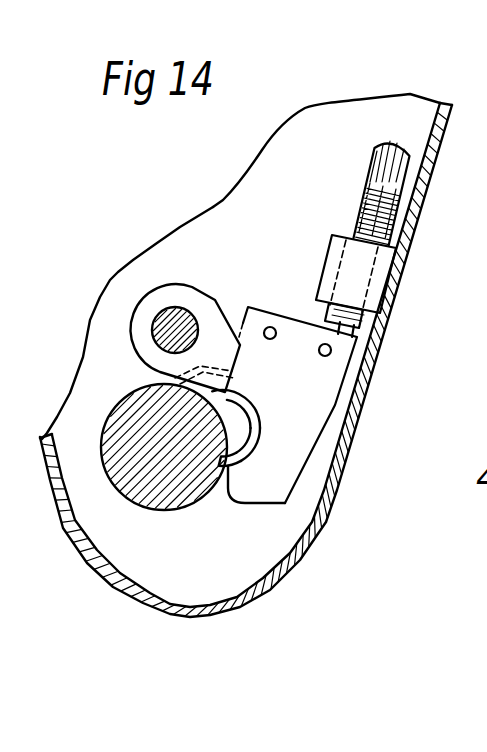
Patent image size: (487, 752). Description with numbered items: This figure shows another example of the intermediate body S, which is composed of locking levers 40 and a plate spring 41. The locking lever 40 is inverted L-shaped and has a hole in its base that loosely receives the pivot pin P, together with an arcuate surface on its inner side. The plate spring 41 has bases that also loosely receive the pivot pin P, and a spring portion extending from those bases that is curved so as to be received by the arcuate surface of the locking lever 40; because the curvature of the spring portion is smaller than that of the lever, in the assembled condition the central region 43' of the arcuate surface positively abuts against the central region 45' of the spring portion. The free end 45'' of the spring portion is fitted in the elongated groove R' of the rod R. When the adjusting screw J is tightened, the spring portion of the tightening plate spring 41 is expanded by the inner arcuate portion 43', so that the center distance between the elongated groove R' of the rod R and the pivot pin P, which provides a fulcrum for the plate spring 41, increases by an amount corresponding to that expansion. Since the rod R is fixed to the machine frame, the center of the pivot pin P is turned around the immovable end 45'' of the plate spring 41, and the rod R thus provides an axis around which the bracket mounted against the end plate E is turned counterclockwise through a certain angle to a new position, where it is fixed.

The locking lever 40 is at (192, 287).
The pivot pin P is at (160, 318).
The rod R is at (127, 436).
The elongated groove R' is at (147, 558).
The end plate E is at (428, 170).
The adjusting screw J is at (387, 241).
The intermediate body S is at (357, 350).
The central region of the arcuate surface 43' is at (337, 393).
The hook jaw 45' is at (343, 429).
The plate spring 41 is at (253, 443).
The free end of the spring portion 45'' is at (307, 538).